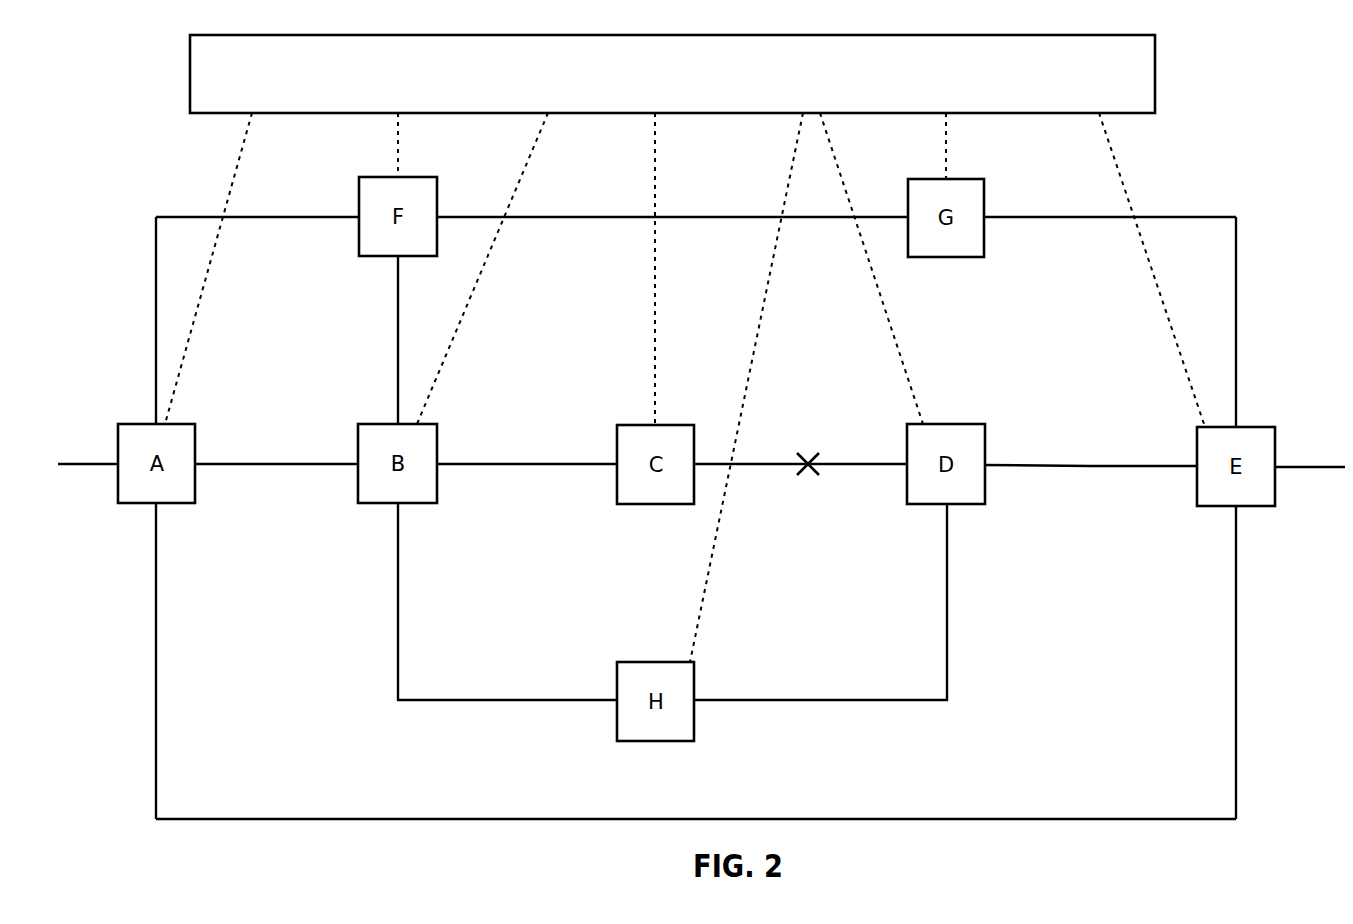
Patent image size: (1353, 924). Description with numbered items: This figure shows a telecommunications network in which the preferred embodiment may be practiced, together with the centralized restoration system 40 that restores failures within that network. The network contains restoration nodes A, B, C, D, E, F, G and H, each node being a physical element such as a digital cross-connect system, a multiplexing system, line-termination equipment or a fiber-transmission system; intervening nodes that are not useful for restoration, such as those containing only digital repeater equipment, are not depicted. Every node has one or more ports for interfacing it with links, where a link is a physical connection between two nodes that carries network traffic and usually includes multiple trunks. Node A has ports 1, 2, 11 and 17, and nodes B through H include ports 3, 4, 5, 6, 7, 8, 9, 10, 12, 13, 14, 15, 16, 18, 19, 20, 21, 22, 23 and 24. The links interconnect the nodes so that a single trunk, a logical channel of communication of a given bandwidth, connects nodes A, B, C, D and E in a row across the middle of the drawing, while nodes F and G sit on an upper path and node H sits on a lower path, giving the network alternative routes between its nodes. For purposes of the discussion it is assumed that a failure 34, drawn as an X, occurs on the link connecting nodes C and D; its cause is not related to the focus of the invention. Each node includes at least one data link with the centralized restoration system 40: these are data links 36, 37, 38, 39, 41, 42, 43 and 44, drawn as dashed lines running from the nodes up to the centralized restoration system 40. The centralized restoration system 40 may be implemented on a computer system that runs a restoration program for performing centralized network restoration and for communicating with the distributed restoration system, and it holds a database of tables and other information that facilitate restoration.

The port 1 is at (118, 463).
The port 2 is at (195, 464).
The port 3 is at (358, 463).
The port 4 is at (437, 464).
The port 5 is at (617, 463).
The port 6 is at (694, 464).
The port 7 is at (907, 463).
The port 8 is at (985, 464).
The port 9 is at (1197, 466).
The port 10 is at (1275, 466).
The port 11 is at (156, 423).
The port 12 is at (358, 212).
The port 13 is at (438, 212).
The port 14 is at (907, 214).
The port 15 is at (985, 214).
The port 16 is at (1237, 428).
The port 17 is at (156, 504).
The port 18 is at (1237, 507).
The port 19 is at (398, 504).
The port 20 is at (617, 700).
The port 21 is at (694, 700).
The port 22 is at (946, 505).
The port 23 is at (397, 258).
The port 24 is at (398, 423).
The failure 34 is at (806, 453).
The data link 36 is at (236, 163).
The data link 37 is at (397, 160).
The data link 38 is at (536, 164).
The data link 39 is at (656, 178).
The centralized restoration system 40 is at (189, 58).
The data link 41 is at (788, 180).
The data link 42 is at (838, 163).
The data link 43 is at (947, 165).
The data link 44 is at (1117, 170).